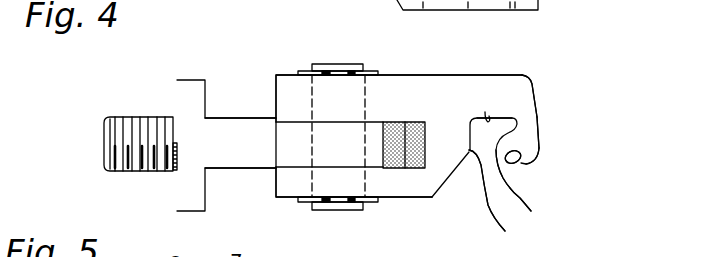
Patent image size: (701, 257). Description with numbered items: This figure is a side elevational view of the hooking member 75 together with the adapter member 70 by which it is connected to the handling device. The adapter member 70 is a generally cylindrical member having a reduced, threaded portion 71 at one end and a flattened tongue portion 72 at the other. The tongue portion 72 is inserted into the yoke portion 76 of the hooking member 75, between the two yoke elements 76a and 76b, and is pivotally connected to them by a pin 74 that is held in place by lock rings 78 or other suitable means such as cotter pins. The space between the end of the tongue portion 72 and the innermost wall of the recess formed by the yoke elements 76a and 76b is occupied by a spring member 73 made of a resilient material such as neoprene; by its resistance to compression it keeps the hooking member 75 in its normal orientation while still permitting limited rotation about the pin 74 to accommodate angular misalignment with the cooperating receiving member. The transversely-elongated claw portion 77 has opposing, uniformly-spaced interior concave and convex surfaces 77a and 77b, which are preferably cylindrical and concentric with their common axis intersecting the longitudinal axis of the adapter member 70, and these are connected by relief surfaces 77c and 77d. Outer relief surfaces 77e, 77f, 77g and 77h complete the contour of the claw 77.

The adapter member 70 is at (192, 79).
The threaded portion 71 is at (142, 124).
The tongue portion 72 is at (237, 133).
The spring member 73 is at (408, 127).
The pin 74 is at (340, 64).
The hooking member 75 is at (408, 200).
The yoke portion 76 is at (433, 122).
The yoke element 76a is at (287, 88).
The yoke element 76b is at (284, 185).
The claw portion 77 is at (500, 100).
The concave surface 77a is at (503, 202).
The convex surface 77b is at (519, 166).
The relief surface 77c is at (533, 190).
The relief surface 77d is at (485, 112).
The outer relief surface 77e is at (535, 153).
The outer relief surface 77f is at (540, 133).
The outer relief surface 77g is at (535, 100).
The outer relief surface 77h is at (449, 183).
The lock rings 78 is at (370, 71).